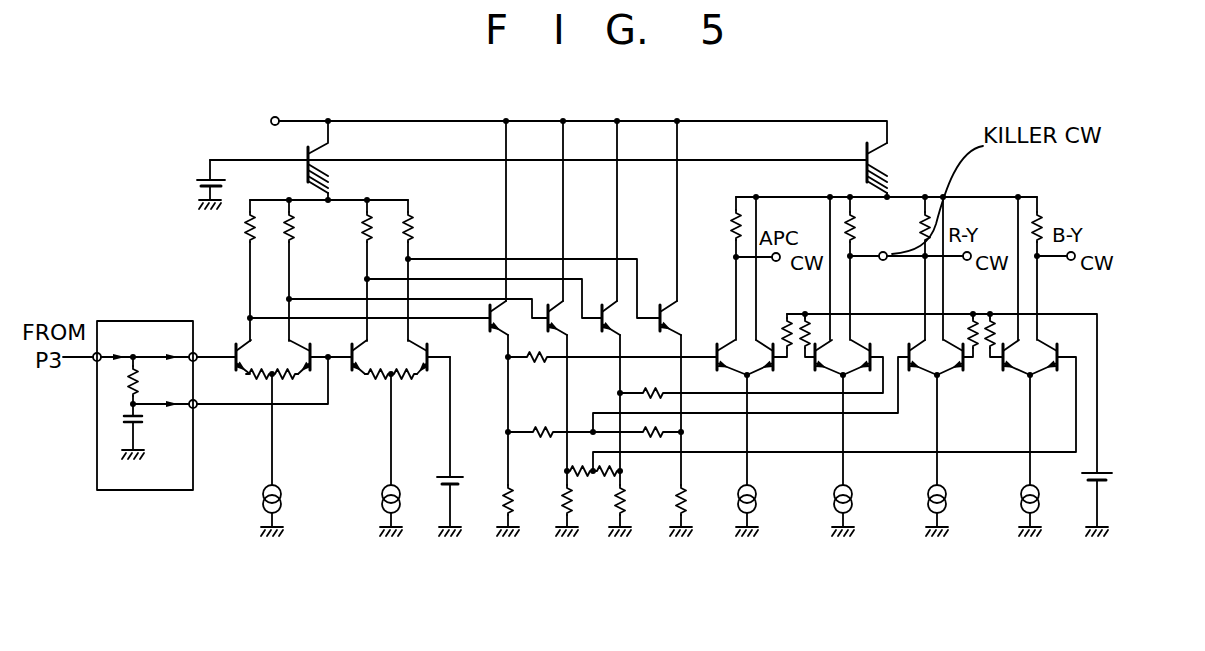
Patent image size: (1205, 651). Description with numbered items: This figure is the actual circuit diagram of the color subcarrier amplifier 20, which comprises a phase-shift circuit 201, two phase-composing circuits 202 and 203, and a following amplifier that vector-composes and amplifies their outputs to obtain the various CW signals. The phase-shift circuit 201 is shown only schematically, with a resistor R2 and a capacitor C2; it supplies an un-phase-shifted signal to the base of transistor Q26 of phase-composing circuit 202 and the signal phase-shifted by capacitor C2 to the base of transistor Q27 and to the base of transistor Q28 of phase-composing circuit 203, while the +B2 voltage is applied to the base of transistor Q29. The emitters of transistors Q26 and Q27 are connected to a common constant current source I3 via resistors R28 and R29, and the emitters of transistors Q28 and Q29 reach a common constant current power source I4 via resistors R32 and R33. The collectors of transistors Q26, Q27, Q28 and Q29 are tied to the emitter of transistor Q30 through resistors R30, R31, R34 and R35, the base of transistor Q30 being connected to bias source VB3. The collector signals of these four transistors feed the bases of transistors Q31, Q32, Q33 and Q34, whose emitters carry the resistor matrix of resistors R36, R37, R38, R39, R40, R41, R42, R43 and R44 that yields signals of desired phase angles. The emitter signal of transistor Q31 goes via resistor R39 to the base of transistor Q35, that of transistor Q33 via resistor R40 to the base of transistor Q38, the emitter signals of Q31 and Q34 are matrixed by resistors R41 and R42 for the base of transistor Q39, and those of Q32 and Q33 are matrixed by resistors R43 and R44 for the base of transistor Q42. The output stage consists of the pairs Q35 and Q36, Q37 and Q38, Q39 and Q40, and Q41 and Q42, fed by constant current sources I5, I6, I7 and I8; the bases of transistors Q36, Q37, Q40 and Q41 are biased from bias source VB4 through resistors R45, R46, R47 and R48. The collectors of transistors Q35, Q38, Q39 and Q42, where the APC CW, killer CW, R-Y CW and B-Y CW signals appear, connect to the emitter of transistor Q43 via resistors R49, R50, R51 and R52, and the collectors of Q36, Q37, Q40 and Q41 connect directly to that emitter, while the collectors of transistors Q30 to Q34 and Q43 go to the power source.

The subcarrier amplifier 20 is at (571, 121).
The phase-shift circuit 201 is at (134, 457).
The phase-composing circuit 202 is at (268, 475).
The phase-composing circuit 203 is at (410, 483).
The transistor Q26 is at (233, 345).
The transistor Q27 is at (306, 330).
The transistor Q28 is at (358, 372).
The transistor Q29 is at (437, 370).
The transistor Q30 is at (322, 154).
The transistor Q31 is at (480, 322).
The transistor Q32 is at (538, 322).
The transistor Q33 is at (592, 322).
The transistor Q34 is at (650, 322).
The transistor Q35 is at (724, 378).
The transistor Q36 is at (766, 378).
The transistor Q37 is at (824, 372).
The transistor Q38 is at (862, 378).
The transistor Q39 is at (916, 343).
The transistor Q40 is at (956, 378).
The transistor Q41 is at (996, 360).
The transistor Q42 is at (1062, 367).
The transistor Q43 is at (875, 160).
The resistor R2 is at (138, 376).
The capacitor C2 is at (148, 431).
The resistor R28 is at (262, 386).
The resistor R29 is at (274, 386).
The resistor R30 is at (247, 236).
The resistor R31 is at (293, 244).
The resistor R32 is at (380, 386).
The resistor R33 is at (396, 386).
The resistor R34 is at (365, 230).
The resistor R35 is at (412, 230).
The resistor R36 is at (512, 492).
The resistor R37 is at (571, 492).
The resistor R38 is at (624, 492).
The resistor R39 is at (685, 492).
The resistor R40 is at (654, 390).
The resistor R41 is at (540, 428).
The resistor R42 is at (658, 440).
The resistor R43 is at (572, 468).
The resistor R44 is at (606, 466).
The resistor R45 is at (784, 324).
The resistor R46 is at (809, 318).
The resistor R47 is at (971, 320).
The resistor R48 is at (994, 320).
The resistor R49 is at (732, 226).
The resistor R50 is at (846, 222).
The resistor R51 is at (921, 236).
The resistor R52 is at (1040, 214).
The constant current source I3 is at (284, 455).
The constant current power source I4 is at (402, 455).
The constant current source I5 is at (760, 454).
The constant current source I6 is at (854, 454).
The constant current source I7 is at (947, 454).
The constant current source I8 is at (1041, 454).
The +B2 voltage B2 is at (467, 446).
The bias source VB3 is at (190, 184).
The bias source VB4 is at (1122, 504).